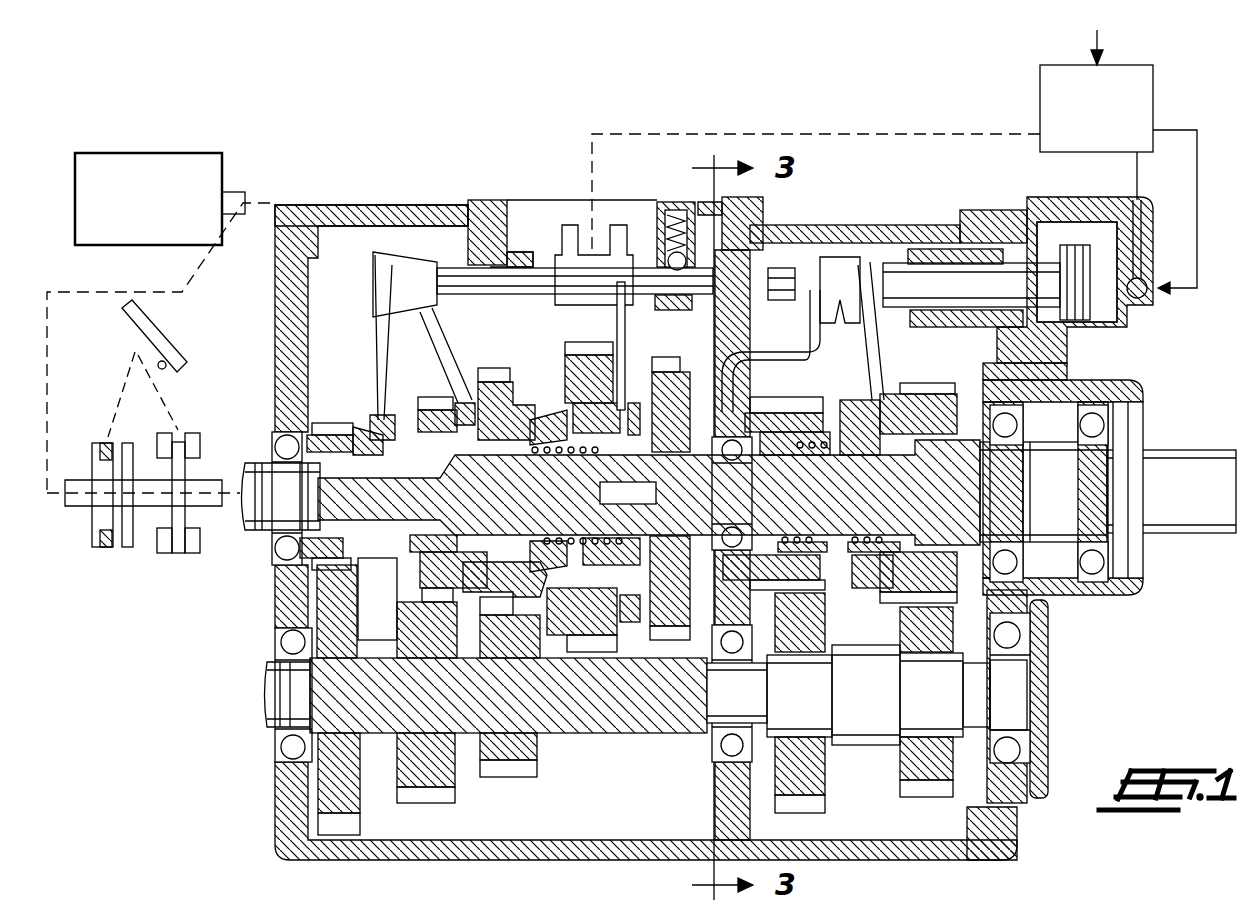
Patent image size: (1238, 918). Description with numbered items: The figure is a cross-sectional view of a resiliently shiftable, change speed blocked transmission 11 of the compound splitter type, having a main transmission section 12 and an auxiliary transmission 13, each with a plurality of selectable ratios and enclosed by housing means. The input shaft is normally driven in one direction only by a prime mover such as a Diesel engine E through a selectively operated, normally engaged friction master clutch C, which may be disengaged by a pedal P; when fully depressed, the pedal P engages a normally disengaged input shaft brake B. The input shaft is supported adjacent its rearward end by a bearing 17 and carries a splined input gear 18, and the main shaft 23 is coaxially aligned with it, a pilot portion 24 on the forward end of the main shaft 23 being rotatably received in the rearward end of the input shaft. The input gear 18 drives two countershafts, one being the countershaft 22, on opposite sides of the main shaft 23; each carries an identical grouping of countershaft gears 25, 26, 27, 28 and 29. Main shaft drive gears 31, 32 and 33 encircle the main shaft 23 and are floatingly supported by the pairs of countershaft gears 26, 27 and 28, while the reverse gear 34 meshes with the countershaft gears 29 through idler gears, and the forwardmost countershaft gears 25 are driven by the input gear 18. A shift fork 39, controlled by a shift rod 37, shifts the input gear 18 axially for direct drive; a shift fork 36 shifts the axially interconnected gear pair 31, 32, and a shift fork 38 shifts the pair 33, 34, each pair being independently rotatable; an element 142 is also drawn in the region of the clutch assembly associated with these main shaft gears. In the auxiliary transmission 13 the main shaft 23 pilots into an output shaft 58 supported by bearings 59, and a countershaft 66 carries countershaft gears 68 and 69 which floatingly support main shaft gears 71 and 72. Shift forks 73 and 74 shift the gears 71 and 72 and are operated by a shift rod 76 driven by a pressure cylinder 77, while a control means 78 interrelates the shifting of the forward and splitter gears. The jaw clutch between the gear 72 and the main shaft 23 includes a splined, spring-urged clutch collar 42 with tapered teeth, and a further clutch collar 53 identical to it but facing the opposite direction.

The blocked transmission 11 is at (336, 198).
The main transmission section 12 is at (358, 212).
The auxiliary transmission 13 is at (843, 228).
The bearing 17 is at (272, 440).
The input gear 18 is at (340, 423).
The countershaft 22 is at (367, 718).
The main shaft 23 is at (649, 492).
The pilot portion 24 is at (281, 496).
The countershaft gear 25 is at (357, 823).
The countershaft gear 26 is at (432, 793).
The countershaft gear 27 is at (518, 770).
The countershaft gear 28 is at (588, 740).
The countershaft gear 29 is at (673, 740).
The main shaft drive gear 31 is at (433, 395).
The main shaft drive gear 32 is at (490, 368).
The main shaft drive gear 33 is at (592, 343).
The reverse gear 34 is at (670, 357).
The shift fork 36 is at (435, 337).
The shift rod 37 is at (452, 263).
The shift fork 38 is at (630, 320).
The shift fork 39 is at (370, 337).
The clutch collar 42 is at (847, 397).
The clutch collar 53 is at (827, 407).
The output shaft 58 is at (1195, 447).
The bearings 59 is at (1135, 418).
The countershaft 66 is at (857, 652).
The countershaft gear 68 is at (813, 790).
The countershaft gear 69 is at (898, 777).
The main shaft gear 71 is at (777, 403).
The main shaft gear 72 is at (928, 370).
The shift fork 73 is at (760, 347).
The shift fork 74 is at (873, 345).
The shift rod 76 is at (905, 277).
The pressure cylinder 77 is at (1100, 310).
The control means 78 is at (1142, 80).
The synchronizer 142 is at (563, 410).
The Diesel engine E is at (158, 153).
The pedal P is at (150, 330).
The input shaft brake B is at (185, 562).
The friction master clutch C is at (118, 560).